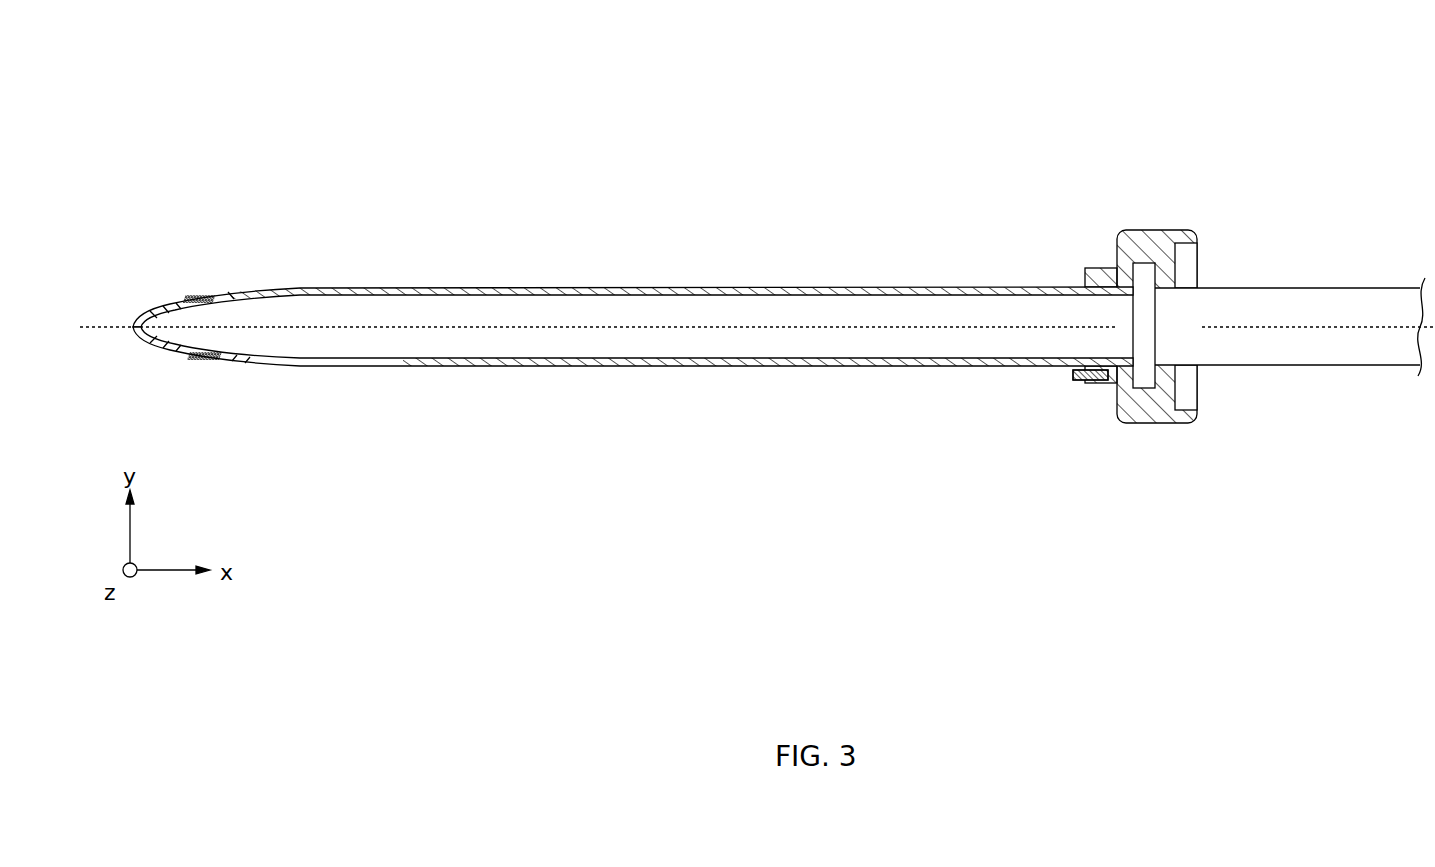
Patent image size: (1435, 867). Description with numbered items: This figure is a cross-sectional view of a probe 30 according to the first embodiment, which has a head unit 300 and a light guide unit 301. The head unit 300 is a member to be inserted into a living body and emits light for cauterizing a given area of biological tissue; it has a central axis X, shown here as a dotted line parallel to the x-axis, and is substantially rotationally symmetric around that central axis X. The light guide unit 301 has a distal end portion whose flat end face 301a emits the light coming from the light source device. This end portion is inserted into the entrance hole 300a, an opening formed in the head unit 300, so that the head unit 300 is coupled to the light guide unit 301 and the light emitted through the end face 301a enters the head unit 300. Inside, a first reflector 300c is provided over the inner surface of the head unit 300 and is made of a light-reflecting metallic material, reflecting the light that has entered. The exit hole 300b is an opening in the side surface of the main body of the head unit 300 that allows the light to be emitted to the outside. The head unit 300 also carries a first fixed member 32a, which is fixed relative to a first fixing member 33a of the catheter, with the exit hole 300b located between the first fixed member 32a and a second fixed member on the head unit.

The probe 30 is at (1297, 132).
The head unit 300 is at (879, 241).
The entrance hole 300a is at (1157, 287).
The exit hole 300b is at (312, 367).
The first reflector 300c is at (628, 360).
The light guide unit 301 is at (1263, 300).
The end face 301a is at (1153, 315).
The first fixed member 32a is at (195, 297).
The first fixing member 33a is at (1080, 381).
The central axis X is at (103, 323).